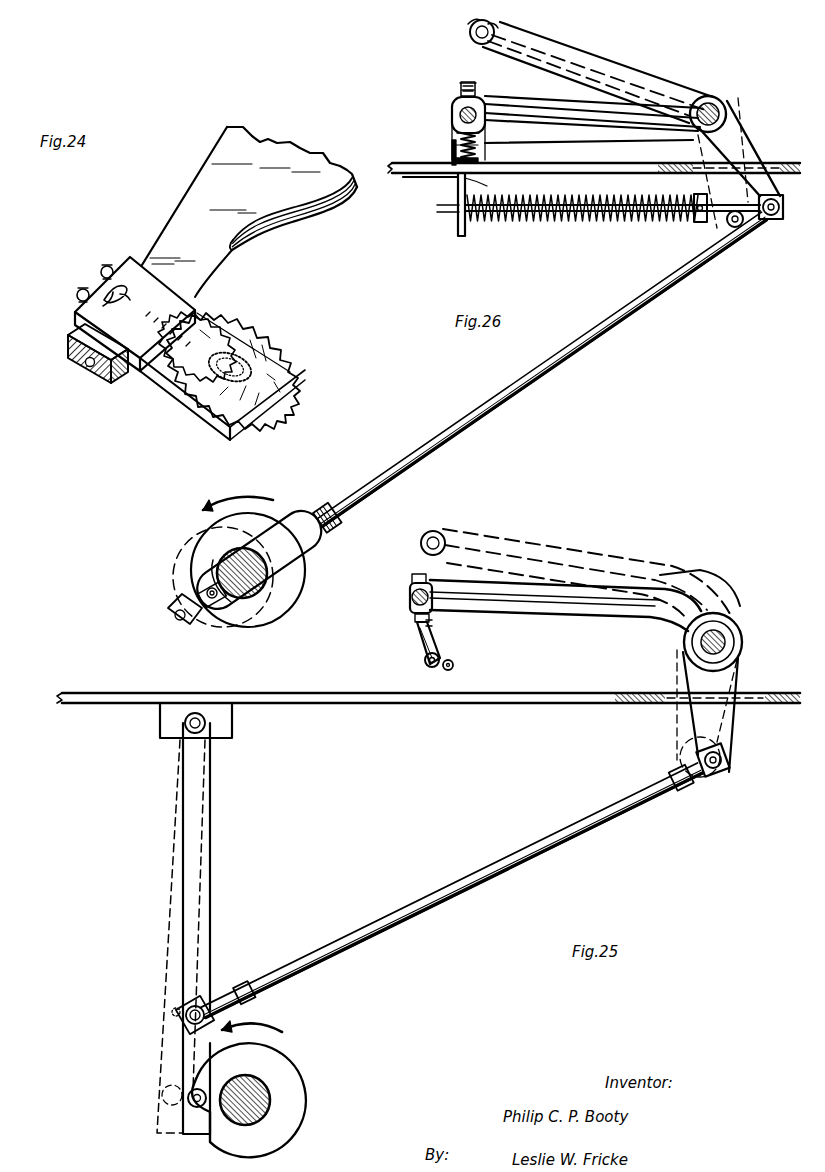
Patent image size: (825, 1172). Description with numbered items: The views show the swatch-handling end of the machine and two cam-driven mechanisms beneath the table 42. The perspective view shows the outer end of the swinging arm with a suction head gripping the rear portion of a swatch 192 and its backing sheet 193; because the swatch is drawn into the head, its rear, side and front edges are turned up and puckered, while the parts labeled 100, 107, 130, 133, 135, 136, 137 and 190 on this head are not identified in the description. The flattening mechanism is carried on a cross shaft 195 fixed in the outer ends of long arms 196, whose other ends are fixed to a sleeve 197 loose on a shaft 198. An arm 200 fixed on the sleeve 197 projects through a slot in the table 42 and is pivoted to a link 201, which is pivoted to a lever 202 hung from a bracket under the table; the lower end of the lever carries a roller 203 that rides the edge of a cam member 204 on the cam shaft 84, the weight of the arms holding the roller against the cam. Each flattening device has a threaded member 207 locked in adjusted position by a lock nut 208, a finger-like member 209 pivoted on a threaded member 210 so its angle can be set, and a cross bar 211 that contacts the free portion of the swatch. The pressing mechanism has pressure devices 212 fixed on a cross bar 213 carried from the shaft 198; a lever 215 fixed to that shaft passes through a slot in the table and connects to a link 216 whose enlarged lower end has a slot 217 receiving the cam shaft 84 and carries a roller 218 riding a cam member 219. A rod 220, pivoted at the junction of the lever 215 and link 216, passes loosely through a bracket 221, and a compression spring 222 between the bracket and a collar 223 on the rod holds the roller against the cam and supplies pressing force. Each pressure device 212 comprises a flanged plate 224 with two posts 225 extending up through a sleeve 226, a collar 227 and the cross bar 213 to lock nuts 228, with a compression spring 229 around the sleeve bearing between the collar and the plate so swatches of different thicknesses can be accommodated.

In FIG. 26, the table 42 is at (674, 162).
In FIG. 25, the table 42 is at (100, 692).
In FIG. 26, the cam shaft 84 is at (208, 554).
In FIG. 25, the cam shaft 84 is at (270, 1098).
In FIG. 24, the gear hub 100 is at (248, 330).
In FIG. 24, the base plate 107 is at (167, 394).
In FIG. 24, the clamp block 130 is at (88, 366).
In FIG. 24, the blade 133 is at (191, 189).
In FIG. 24, the mounting block 135 is at (175, 300).
In FIG. 24, the screw 136 is at (105, 273).
In FIG. 24, the screw 137 is at (84, 294).
In FIG. 25, the stop 190 is at (416, 624).
In FIG. 24, the swatch 192 is at (300, 372).
In FIG. 24, the backing sheet 193 is at (286, 344).
In FIG. 25, the cross shaft 195 is at (414, 592).
In FIG. 25, the arms 196 is at (496, 572).
In FIG. 25, the sleeve 197 is at (732, 628).
In FIG. 26, the shaft 198 is at (726, 98).
In FIG. 25, the shaft 198 is at (698, 641).
In FIG. 25, the arm 200 is at (730, 688).
In FIG. 25, the link 201 is at (633, 824).
In FIG. 25, the lever 202 is at (184, 938).
In FIG. 25, the roller 203 is at (190, 1105).
In FIG. 25, the cam member 204 is at (286, 1050).
In FIG. 25, the member 207 is at (426, 638).
In FIG. 25, the lock nut 208 is at (444, 624).
In FIG. 25, the finger-like member 209 is at (440, 660).
In FIG. 26, the member 210 is at (622, 128).
In FIG. 25, the cross bar 211 is at (454, 665).
In FIG. 26, the pressure devices 212 is at (448, 136).
In FIG. 26, the cross bar 213 is at (464, 102).
In FIG. 26, the lever 215 is at (742, 134).
In FIG. 26, the link 216 is at (774, 222).
In FIG. 26, the slot 217 is at (282, 528).
In FIG. 26, the roller 218 is at (214, 618).
In FIG. 26, the cam member 219 is at (302, 618).
In FIG. 26, the rod 220 is at (686, 226).
In FIG. 26, the bracket 221 is at (458, 196).
In FIG. 26, the compression spring 222 is at (560, 222).
In FIG. 26, the collar 223 is at (696, 196).
In FIG. 26, the flanged plate 224 is at (446, 148).
In FIG. 26, the posts 225 is at (472, 148).
In FIG. 26, the sleeve 226 is at (488, 136).
In FIG. 26, the collar 227 is at (482, 104).
In FIG. 26, the lock nuts 228 is at (472, 92).
In FIG. 26, the compression spring 229 is at (452, 149).